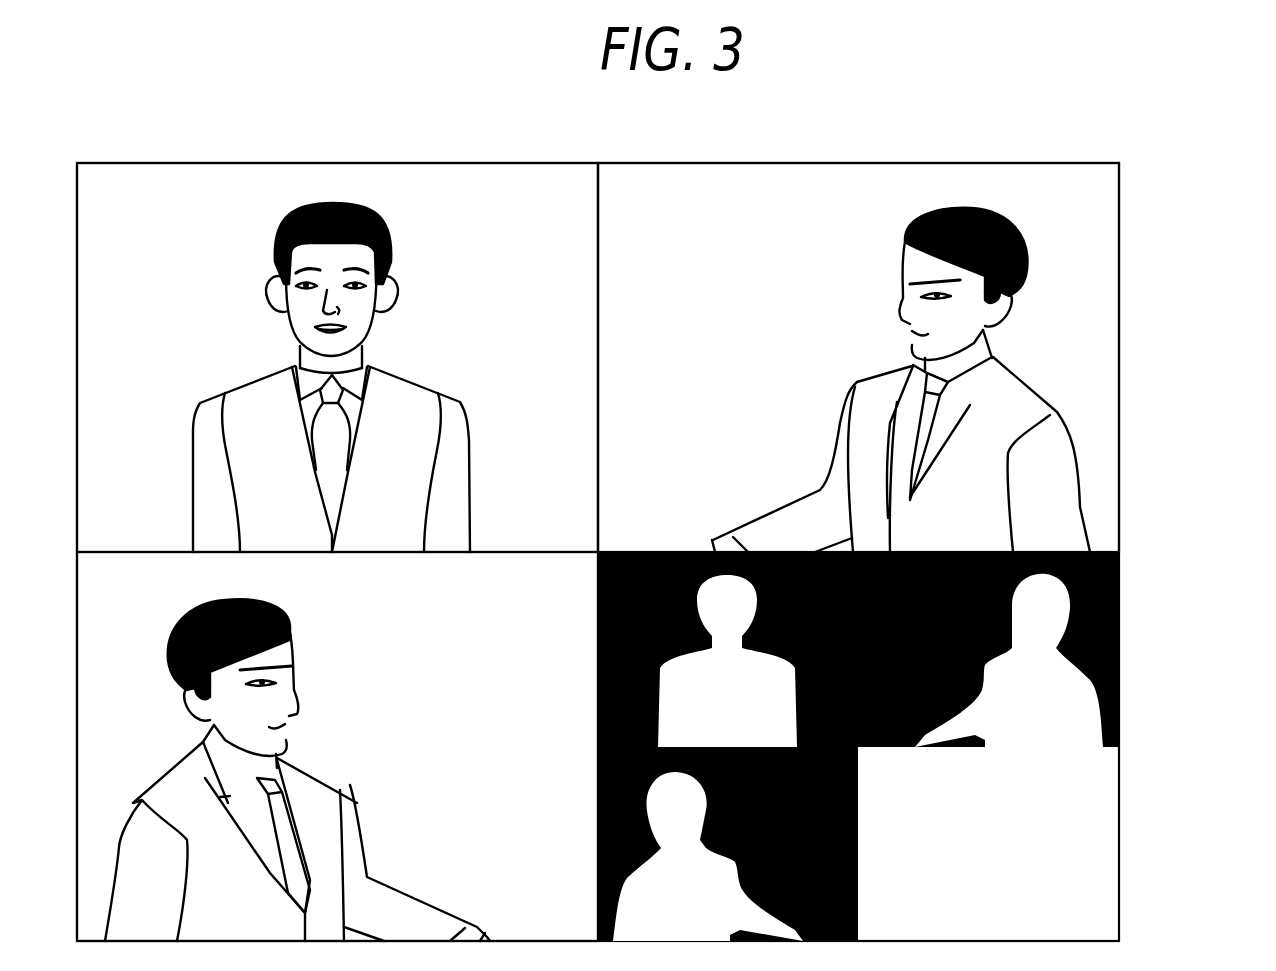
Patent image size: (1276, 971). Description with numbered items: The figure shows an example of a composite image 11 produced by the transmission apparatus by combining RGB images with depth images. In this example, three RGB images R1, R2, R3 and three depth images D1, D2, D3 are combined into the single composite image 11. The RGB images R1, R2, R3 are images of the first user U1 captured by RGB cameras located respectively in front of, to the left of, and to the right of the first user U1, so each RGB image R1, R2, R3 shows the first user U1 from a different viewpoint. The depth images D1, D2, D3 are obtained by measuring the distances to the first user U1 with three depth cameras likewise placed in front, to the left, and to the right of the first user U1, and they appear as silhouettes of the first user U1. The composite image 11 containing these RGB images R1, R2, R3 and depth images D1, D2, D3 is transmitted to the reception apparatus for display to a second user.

The composite image 11 is at (1190, 161).
The RGB image R1 is at (581, 201).
The RGB image R2 is at (1103, 202).
The RGB image R3 is at (582, 589).
The depth image D1 is at (846, 587).
The depth image D2 is at (1107, 585).
The depth image D3 is at (846, 782).
The first user U1 is at (400, 403).